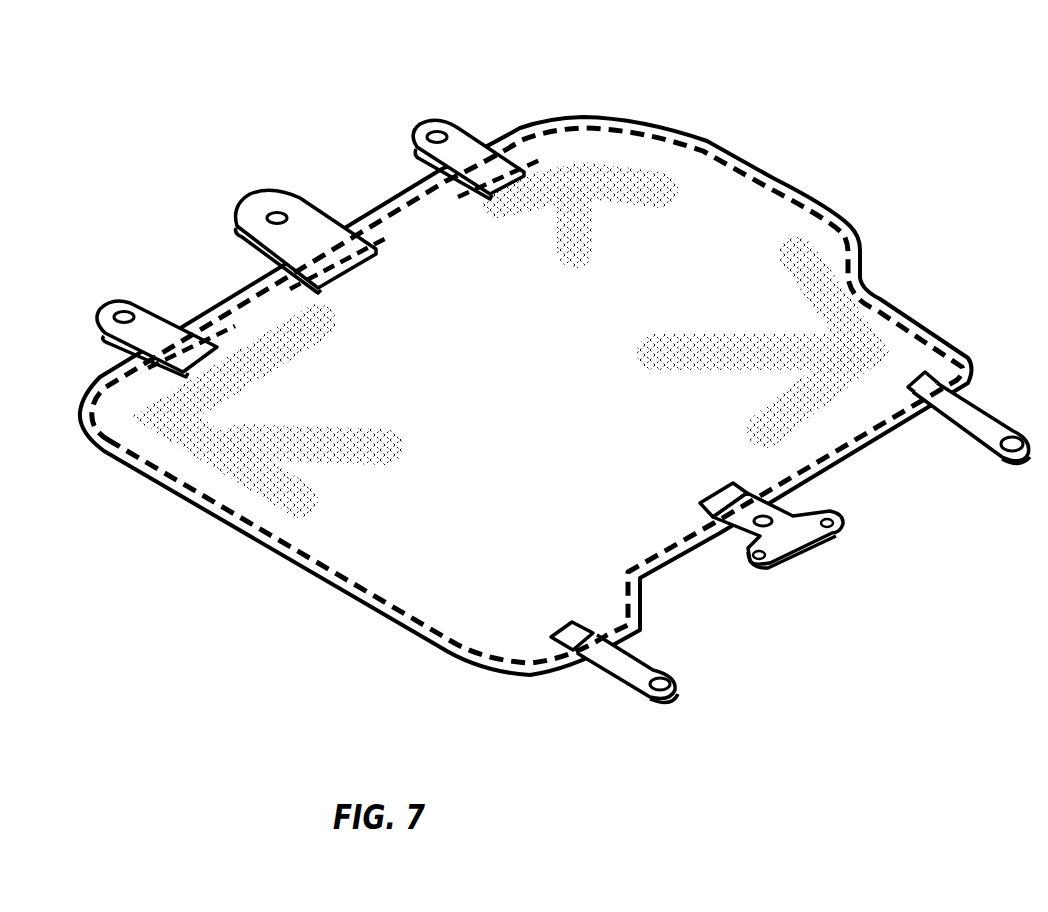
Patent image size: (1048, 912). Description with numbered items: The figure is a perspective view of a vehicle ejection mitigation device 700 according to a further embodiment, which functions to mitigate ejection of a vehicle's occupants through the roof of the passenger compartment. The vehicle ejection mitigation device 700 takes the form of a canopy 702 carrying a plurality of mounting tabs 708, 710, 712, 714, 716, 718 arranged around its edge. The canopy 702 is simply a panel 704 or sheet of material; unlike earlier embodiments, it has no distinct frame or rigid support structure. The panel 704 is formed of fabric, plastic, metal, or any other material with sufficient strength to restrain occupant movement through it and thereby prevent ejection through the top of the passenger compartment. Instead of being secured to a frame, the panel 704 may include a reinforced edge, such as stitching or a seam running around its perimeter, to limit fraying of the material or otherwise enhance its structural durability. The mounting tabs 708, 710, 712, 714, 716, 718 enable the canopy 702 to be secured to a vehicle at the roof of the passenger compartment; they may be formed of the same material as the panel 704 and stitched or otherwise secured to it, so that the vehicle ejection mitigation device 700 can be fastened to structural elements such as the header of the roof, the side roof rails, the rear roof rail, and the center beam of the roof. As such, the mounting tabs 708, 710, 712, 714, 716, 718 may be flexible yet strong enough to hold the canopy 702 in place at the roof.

The vehicle ejection mitigation device 700 is at (905, 75).
The canopy 702 is at (592, 97).
The panel 704 is at (386, 511).
The mounting tab 708 is at (430, 122).
The mounting tab 710 is at (252, 207).
The mounting tab 712 is at (112, 302).
The mounting tab 714 is at (638, 684).
The mounting tab 716 is at (787, 535).
The mounting tab 718 is at (983, 418).